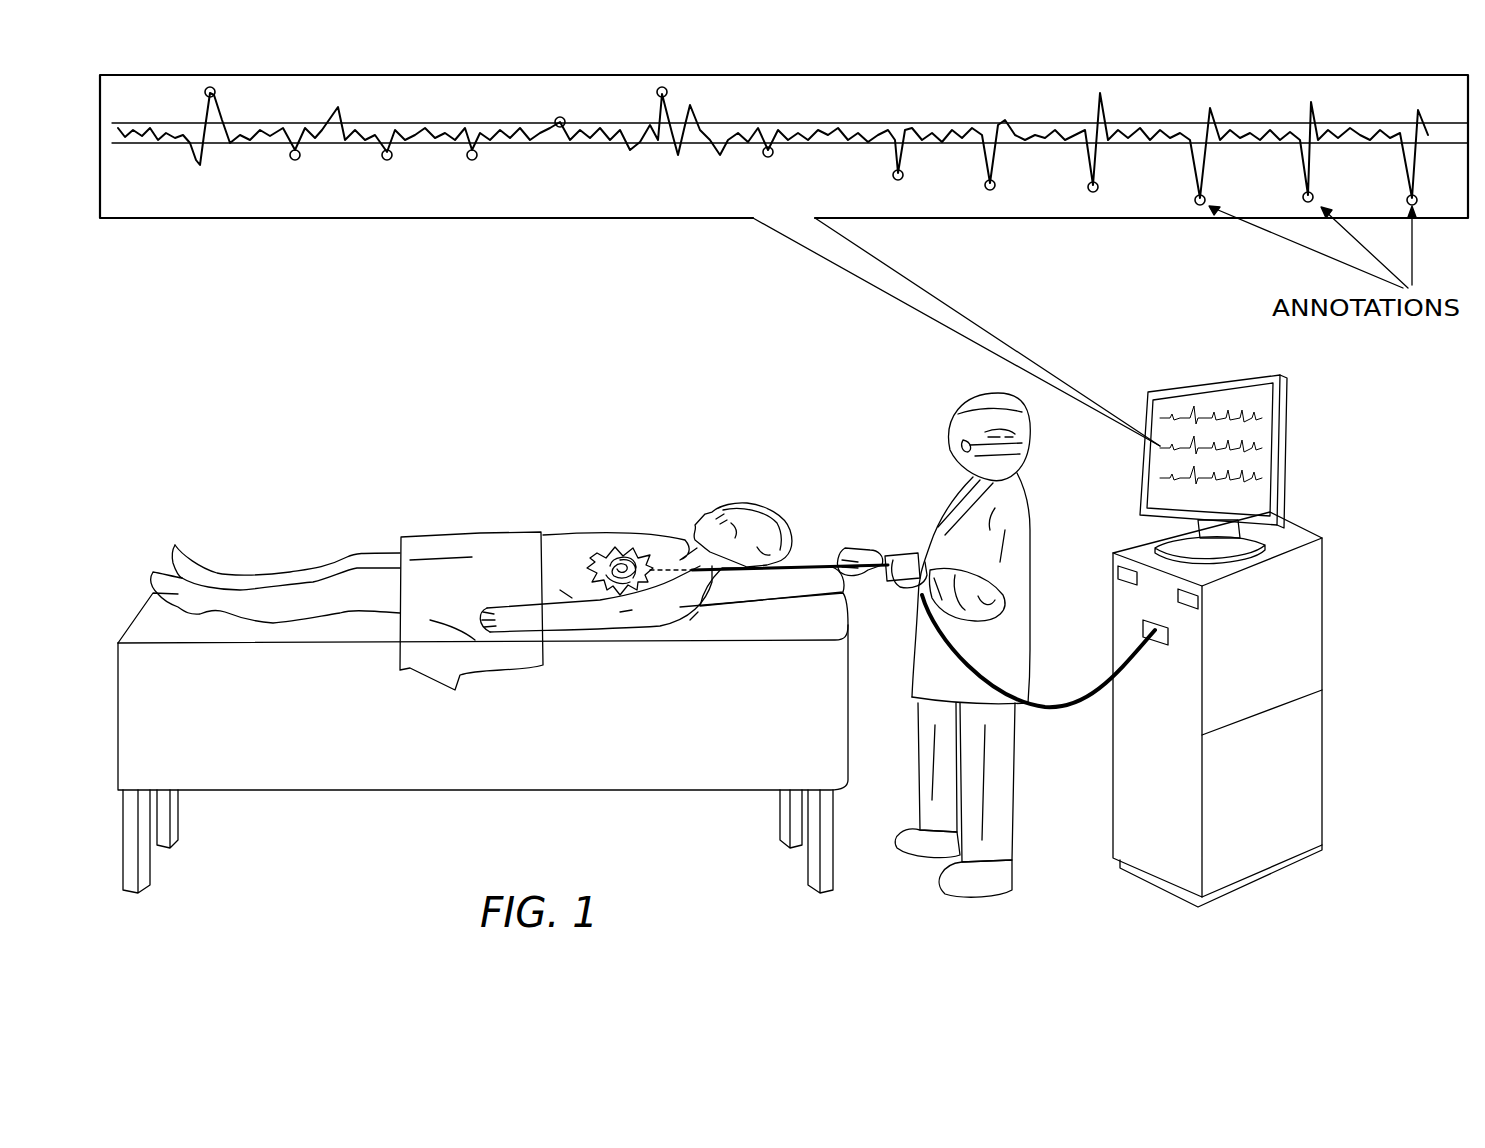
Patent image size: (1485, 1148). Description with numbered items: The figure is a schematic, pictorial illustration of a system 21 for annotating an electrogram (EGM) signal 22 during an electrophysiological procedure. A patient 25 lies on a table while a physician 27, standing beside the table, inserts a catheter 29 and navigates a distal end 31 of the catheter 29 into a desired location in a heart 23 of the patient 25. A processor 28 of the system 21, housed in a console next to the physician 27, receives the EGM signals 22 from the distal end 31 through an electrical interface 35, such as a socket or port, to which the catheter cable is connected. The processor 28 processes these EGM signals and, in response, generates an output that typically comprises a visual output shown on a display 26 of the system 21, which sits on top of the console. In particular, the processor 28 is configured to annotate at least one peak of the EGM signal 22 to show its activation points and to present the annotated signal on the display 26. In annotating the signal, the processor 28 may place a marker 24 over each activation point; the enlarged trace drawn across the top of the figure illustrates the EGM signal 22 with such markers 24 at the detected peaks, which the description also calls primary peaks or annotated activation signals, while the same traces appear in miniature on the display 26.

The system 21 is at (1327, 458).
The electrogram (EGM) signal 22 is at (576, 196).
The heart 23 is at (600, 553).
The marker 24 is at (206, 91).
The patient 25 is at (748, 520).
The display 26 is at (1200, 392).
The physician 27 is at (945, 440).
The processor 28 is at (1313, 612).
The catheter 29 is at (825, 560).
The distal end 31 is at (625, 555).
The electrical interface 35 is at (1158, 642).